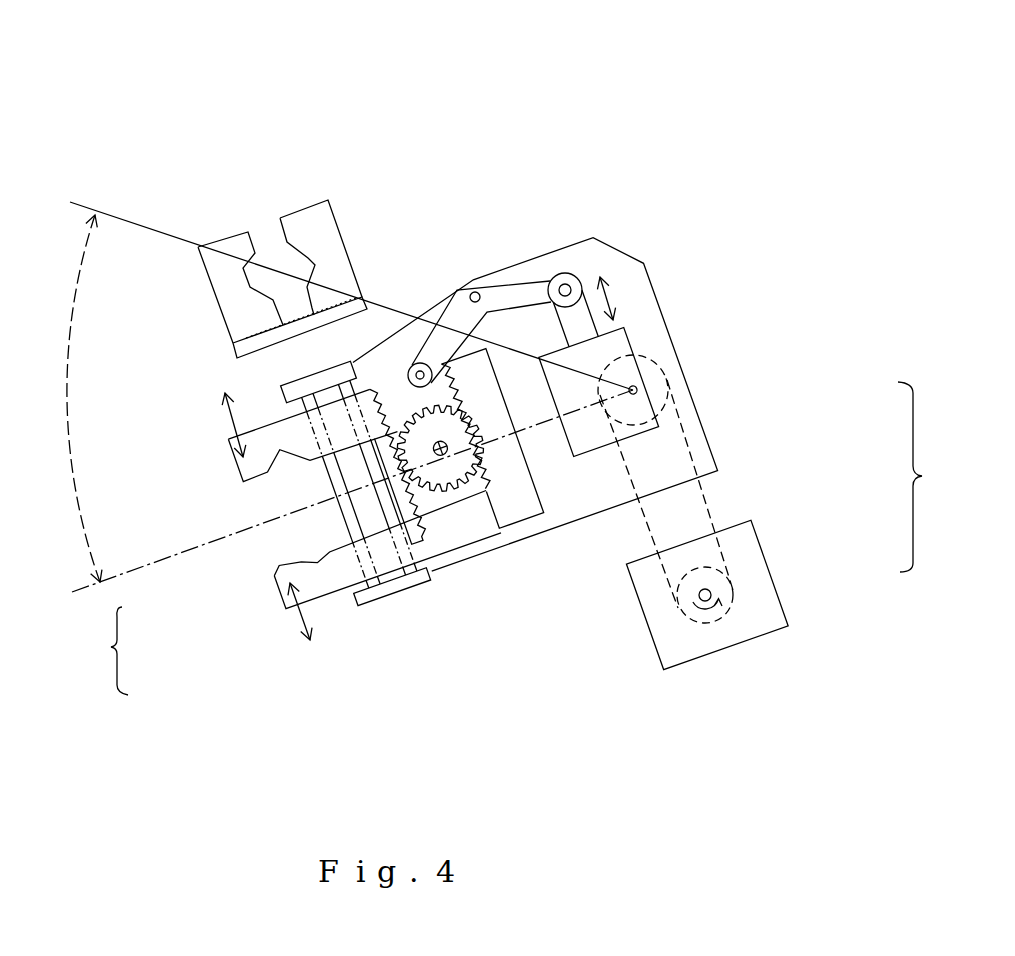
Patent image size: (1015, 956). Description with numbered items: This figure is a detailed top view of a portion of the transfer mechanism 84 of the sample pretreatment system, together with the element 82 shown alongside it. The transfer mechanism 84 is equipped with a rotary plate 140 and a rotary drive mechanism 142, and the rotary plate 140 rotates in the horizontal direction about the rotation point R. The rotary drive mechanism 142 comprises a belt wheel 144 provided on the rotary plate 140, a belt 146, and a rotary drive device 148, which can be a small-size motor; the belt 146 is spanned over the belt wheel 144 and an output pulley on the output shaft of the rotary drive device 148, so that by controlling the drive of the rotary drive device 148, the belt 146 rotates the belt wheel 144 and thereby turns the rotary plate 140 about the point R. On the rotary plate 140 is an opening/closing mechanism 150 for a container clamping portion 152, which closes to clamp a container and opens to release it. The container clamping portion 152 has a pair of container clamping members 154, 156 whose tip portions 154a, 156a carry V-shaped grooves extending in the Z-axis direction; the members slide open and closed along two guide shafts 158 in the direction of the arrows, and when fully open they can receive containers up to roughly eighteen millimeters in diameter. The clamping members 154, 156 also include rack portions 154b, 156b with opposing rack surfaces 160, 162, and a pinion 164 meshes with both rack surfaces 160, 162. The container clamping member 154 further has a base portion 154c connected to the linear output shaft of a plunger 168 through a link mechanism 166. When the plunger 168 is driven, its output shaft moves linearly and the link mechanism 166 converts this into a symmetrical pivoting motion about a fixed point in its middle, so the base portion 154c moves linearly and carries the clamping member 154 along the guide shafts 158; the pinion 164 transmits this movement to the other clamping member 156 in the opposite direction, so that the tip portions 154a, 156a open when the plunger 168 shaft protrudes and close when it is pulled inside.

The workpiece holder block 82 is at (329, 178).
The transfer mechanism 84 is at (519, 400).
The opening/closing mechanism 150 is at (519, 430).
The rotary plate 140 is at (620, 243).
The rotary drive mechanism 142 is at (790, 525).
The belt wheel 144 is at (700, 408).
The belt 146 is at (707, 497).
The rotary drive device 148 is at (783, 580).
The container clamping portion 152 is at (279, 530).
The container clamping member 154 is at (320, 612).
The tip portion 154a is at (328, 597).
The rack portion 154b is at (591, 519).
The base portion 154c is at (418, 362).
The container clamping member 156 is at (290, 517).
The tip portion 156a is at (283, 405).
The rack portion 156b is at (440, 587).
The guide shafts 158 is at (397, 583).
The rack surface 160 is at (515, 475).
The rack surface 162 is at (450, 497).
The pinion 164 is at (468, 505).
The link mechanism 166 is at (448, 288).
The plunger 168 is at (622, 355).
The rotation point R is at (665, 372).